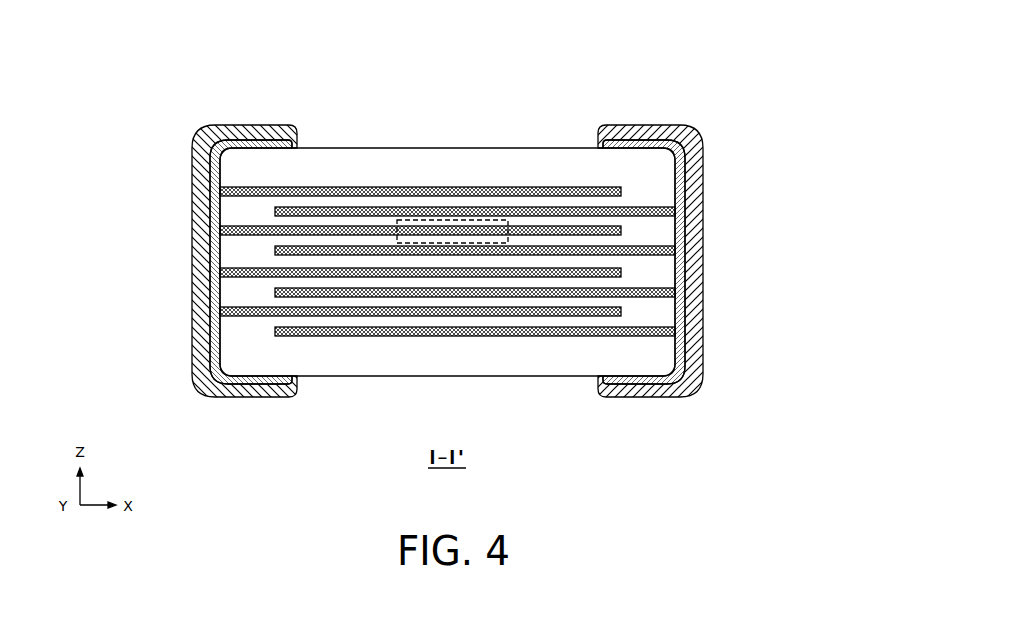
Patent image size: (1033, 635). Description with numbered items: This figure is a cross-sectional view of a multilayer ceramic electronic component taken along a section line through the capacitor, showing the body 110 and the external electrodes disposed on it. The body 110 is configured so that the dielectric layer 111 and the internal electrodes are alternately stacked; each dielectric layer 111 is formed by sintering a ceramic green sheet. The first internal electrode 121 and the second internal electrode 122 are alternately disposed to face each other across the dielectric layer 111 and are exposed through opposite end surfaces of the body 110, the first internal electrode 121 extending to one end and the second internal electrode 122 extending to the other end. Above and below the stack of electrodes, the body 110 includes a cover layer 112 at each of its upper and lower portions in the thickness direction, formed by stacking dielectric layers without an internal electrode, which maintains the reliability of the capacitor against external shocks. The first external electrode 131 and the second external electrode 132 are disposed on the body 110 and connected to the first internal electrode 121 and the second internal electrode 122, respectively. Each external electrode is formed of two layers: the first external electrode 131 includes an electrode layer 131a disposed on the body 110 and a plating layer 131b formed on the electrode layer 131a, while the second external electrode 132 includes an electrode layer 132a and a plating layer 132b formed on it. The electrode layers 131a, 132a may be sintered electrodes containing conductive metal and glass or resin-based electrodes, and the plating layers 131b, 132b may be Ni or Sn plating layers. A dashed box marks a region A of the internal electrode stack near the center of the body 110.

The body 110 is at (386, 148).
The dielectric layer 111 is at (324, 222).
The cover layer 112 is at (449, 165).
The first internal electrode 121 is at (505, 187).
The second internal electrode 122 is at (567, 207).
The first external electrode 131 is at (168, 261).
The electrode layer 131a is at (214, 182).
The plating layer 131b is at (201, 220).
The second external electrode 132 is at (725, 261).
The electrode layer 132a is at (694, 160).
The plating layer 132b is at (694, 212).
The region A is at (452, 243).